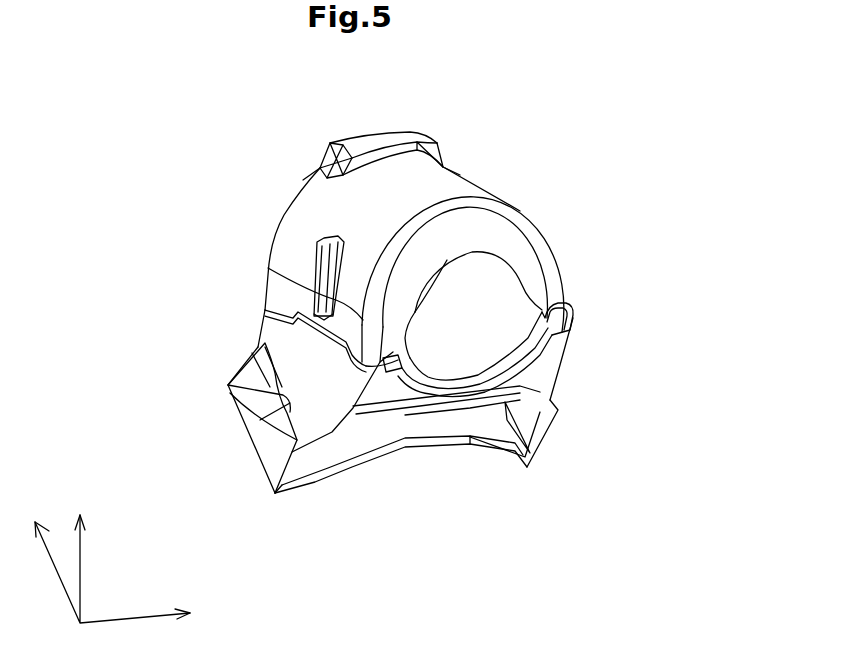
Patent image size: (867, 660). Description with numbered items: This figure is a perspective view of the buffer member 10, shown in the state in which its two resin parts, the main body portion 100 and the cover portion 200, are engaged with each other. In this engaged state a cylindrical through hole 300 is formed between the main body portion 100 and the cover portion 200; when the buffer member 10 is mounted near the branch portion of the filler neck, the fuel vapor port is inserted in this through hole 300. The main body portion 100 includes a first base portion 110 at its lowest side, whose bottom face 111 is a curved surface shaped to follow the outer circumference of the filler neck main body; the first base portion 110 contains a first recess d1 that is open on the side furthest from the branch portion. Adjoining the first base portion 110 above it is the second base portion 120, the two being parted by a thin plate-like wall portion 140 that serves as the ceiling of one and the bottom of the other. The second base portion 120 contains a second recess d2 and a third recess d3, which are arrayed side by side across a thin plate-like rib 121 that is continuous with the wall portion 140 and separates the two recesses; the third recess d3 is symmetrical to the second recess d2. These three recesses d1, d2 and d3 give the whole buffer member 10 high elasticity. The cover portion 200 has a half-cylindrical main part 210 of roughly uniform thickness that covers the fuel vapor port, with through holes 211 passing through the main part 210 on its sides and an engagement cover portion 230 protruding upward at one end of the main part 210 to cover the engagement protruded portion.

The buffer member 10 is at (548, 150).
The main body portion 100 is at (565, 376).
The first base portion 110 is at (555, 435).
The bottom face 111 is at (317, 478).
The second base portion 120 is at (568, 315).
The rib 121 is at (422, 425).
The wall portion 140 is at (501, 400).
The cover portion 200 is at (554, 228).
The main part 210 is at (302, 205).
The through holes 211 is at (312, 270).
The engagement cover portion 230 is at (368, 136).
The through hole 300 is at (441, 332).
The first recess d1 is at (442, 425).
The second recess d2 is at (379, 392).
The third recess d3 is at (536, 361).